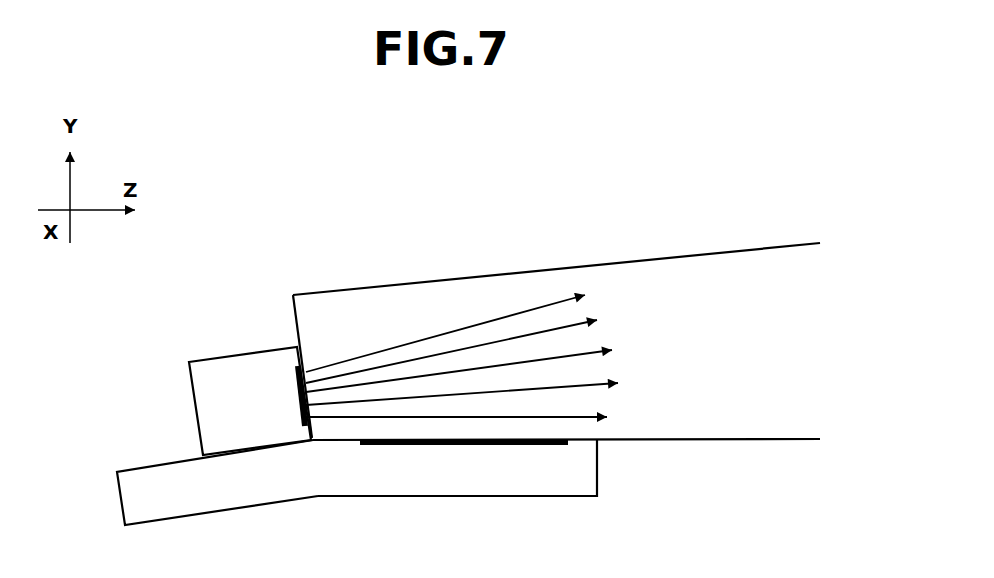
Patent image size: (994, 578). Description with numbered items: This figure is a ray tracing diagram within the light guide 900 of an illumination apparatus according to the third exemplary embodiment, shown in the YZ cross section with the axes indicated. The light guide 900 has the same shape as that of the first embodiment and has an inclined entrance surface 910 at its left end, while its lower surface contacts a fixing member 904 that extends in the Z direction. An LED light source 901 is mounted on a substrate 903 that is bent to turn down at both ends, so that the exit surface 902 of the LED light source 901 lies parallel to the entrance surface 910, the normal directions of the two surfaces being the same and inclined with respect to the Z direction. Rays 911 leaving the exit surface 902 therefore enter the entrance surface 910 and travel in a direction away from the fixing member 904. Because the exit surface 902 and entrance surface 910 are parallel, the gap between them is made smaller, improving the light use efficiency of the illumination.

The light guide 900 is at (512, 277).
The LED light source 901 is at (198, 398).
The exit surface 902 is at (297, 387).
The substrate 903 is at (222, 507).
The fixing member 904 is at (470, 446).
The entrance surface 910 is at (298, 330).
The light beam 911 is at (340, 417).